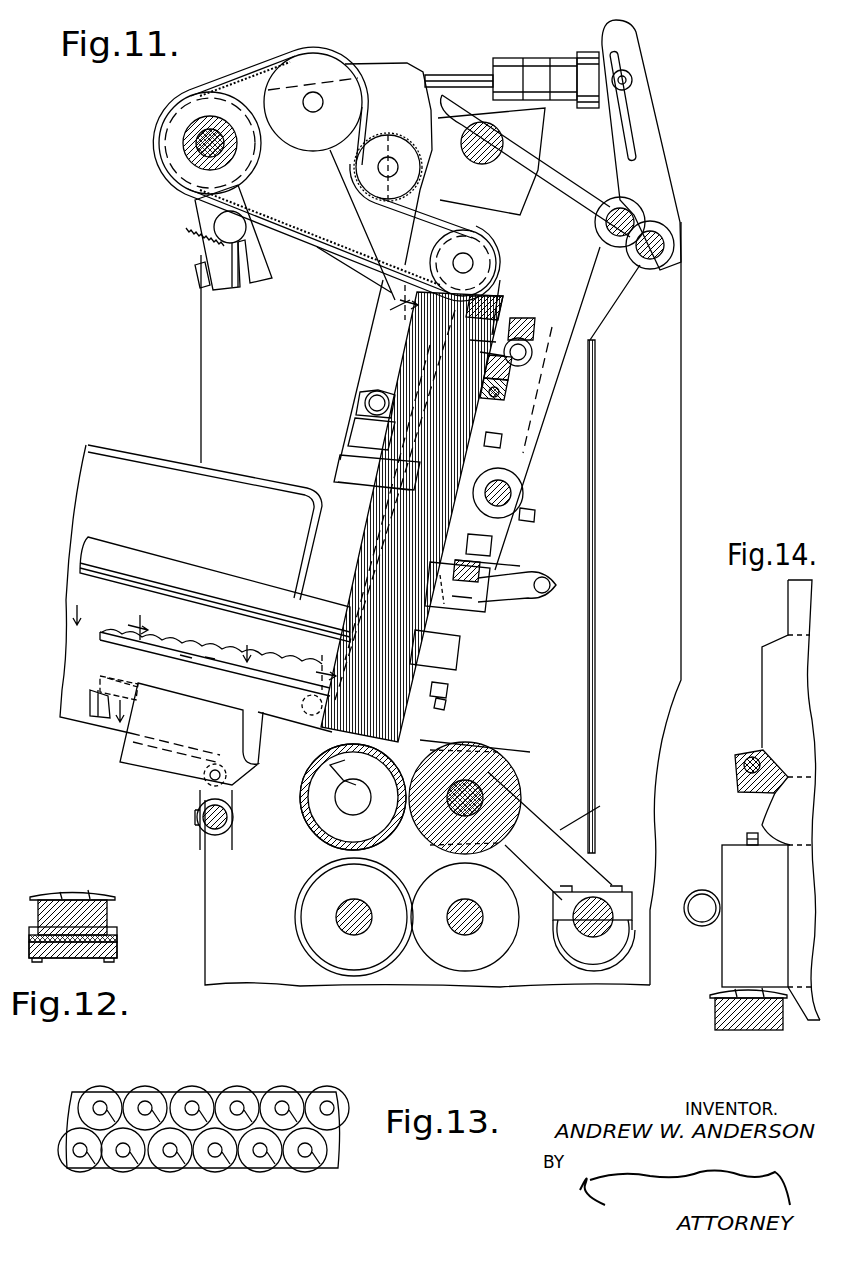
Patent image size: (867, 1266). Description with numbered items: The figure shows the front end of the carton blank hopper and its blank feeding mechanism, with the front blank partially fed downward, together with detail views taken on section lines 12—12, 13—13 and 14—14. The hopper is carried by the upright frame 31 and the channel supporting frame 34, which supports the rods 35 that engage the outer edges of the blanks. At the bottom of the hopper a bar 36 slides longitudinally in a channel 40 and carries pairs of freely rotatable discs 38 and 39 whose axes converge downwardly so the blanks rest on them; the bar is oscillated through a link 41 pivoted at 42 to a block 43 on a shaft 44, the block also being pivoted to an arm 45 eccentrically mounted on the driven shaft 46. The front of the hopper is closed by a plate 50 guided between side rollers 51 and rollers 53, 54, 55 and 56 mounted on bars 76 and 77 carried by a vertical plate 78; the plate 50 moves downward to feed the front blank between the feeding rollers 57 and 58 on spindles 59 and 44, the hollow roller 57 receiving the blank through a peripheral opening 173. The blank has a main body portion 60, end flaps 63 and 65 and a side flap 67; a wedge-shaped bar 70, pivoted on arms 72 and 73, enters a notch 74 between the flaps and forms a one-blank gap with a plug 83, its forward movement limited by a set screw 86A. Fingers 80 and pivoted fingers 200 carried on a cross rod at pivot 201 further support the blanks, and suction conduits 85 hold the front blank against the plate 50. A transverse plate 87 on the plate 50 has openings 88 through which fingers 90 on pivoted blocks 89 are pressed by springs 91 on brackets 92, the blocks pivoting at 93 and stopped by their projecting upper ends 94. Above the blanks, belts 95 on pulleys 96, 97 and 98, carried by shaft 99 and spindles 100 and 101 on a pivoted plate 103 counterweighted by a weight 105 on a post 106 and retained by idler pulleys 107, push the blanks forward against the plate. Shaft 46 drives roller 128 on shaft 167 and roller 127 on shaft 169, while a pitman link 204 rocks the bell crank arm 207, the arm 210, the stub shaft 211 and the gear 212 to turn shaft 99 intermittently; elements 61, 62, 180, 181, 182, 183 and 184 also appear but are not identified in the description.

In FIG. 11, the section line 12— 12 is at (105, 658).
In FIG. 11, the section line 13— 13 is at (164, 622).
In FIG. 11, the section line 14— 14 is at (352, 487).
In FIG. 11, the upright frame 31 is at (218, 355).
In FIG. 11, the channel supporting frame 34 is at (160, 453).
In FIG. 14, the channel supporting frame 34 is at (700, 890).
In FIG. 11, the rod 35 is at (163, 562).
In FIG. 11, the bar 36 is at (100, 636).
In FIG. 12, the bar 36 is at (100, 917).
In FIG. 13, the bar 36 is at (262, 1092).
In FIG. 14, the bar 36 is at (715, 1018).
In FIG. 11, the disc 38 is at (215, 657).
In FIG. 12, the disc 38 is at (36, 896).
In FIG. 13, the disc 38 is at (186, 1094).
In FIG. 14, the disc 38 is at (720, 992).
In FIG. 11, the disc 39 is at (188, 657).
In FIG. 12, the disc 39 is at (96, 894).
In FIG. 13, the disc 39 is at (252, 1162).
In FIG. 14, the disc 39 is at (772, 990).
In FIG. 11, the channel 40 is at (138, 690).
In FIG. 12, the channel 40 is at (117, 933).
In FIG. 11, the link 41 is at (432, 736).
In FIG. 11, the pivot 42 is at (472, 752).
In FIG. 11, the block 43 is at (497, 746).
In FIG. 11, the shaft 44 is at (486, 790).
In FIG. 11, the arm 45 is at (594, 812).
In FIG. 11, the shaft 46 is at (606, 888).
In FIG. 11, the plate 50 is at (440, 655).
In FIG. 11, the side roller 51 is at (457, 587).
In FIG. 11, the roller 53 is at (532, 346).
In FIG. 11, the roller 54 is at (485, 562).
In FIG. 11, the roller 55 is at (396, 318).
In FIG. 11, the roller 56 is at (392, 545).
In FIG. 11, the blank feeding roller 57 is at (305, 824).
In FIG. 11, the blank feeding roller 58 is at (516, 795).
In FIG. 11, the spindle 59 is at (345, 797).
In FIG. 11, the main body portion 60 is at (352, 515).
In FIG. 14, the main body portion 60 is at (767, 640).
In FIG. 14, the leg 61 is at (806, 1020).
In FIG. 14, the upper portion 62 is at (800, 598).
In FIG. 14, the end flap 63 is at (775, 674).
In FIG. 14, the end flap 65 is at (728, 856).
In FIG. 14, the side flap 67 is at (770, 810).
In FIG. 11, the wedge-shaped bar 70 is at (357, 472).
In FIG. 14, the wedge-shaped bar 70 is at (738, 775).
In FIG. 11, the arm 72 is at (356, 415).
In FIG. 11, the arm 73 is at (368, 440).
In FIG. 14, the notch 74 is at (746, 758).
In FIG. 11, the bar 76 is at (458, 614).
In FIG. 11, the bar 77 is at (382, 575).
In FIG. 11, the vertical plate 78 is at (535, 128).
In FIG. 11, the finger 80 is at (520, 588).
In FIG. 14, the finger 80 is at (752, 847).
In FIG. 11, the plug 83 is at (483, 542).
In FIG. 11, the conduit 85 is at (505, 446).
In FIG. 11, the set screw 86A is at (535, 516).
In FIG. 11, the transverse plate 87 is at (498, 298).
In FIG. 11, the opening 88 is at (470, 340).
In FIG. 11, the block 89 is at (508, 380).
In FIG. 11, the finger 90 is at (512, 362).
In FIG. 11, the spring 91 is at (518, 300).
In FIG. 11, the bracket 92 is at (535, 330).
In FIG. 11, the pivot 93 is at (500, 393).
In FIG. 11, the projecting upper end 94 is at (480, 353).
In FIG. 11, the belt 95 is at (242, 75).
In FIG. 11, the pulley 96 is at (196, 112).
In FIG. 11, the pulley 97 is at (298, 70).
In FIG. 11, the pulley 98 is at (438, 250).
In FIG. 11, the shaft 99 is at (188, 136).
In FIG. 11, the spindle 100 is at (314, 92).
In FIG. 11, the spindle 101 is at (466, 255).
In FIG. 11, the plate 103 is at (375, 65).
In FIG. 11, the weight 105 is at (562, 58).
In FIG. 11, the post 106 is at (450, 75).
In FIG. 11, the idler pulley 107 is at (389, 145).
In FIG. 11, the roller 127 is at (355, 960).
In FIG. 11, the feed roller 128 is at (460, 955).
In FIG. 11, the shaft 167 is at (478, 925).
In FIG. 11, the shaft 169 is at (338, 918).
In FIG. 11, the peripheral opening 173 is at (310, 716).
In FIG. 11, the arm 180 is at (600, 296).
In FIG. 11, the pivot pin 181 is at (512, 490).
In FIG. 11, the pivot 182 is at (628, 210).
In FIG. 11, the link 183 is at (580, 180).
In FIG. 11, the pin 184 is at (502, 152).
In FIG. 11, the finger 200 is at (300, 732).
In FIG. 11, the pivot 201 is at (210, 777).
In FIG. 11, the pitman rod 204 is at (595, 625).
In FIG. 11, the arm 207 is at (637, 55).
In FIG. 11, the arm 210 is at (182, 198).
In FIG. 11, the stub shaft 211 is at (215, 223).
In FIG. 11, the gear 212 is at (188, 242).